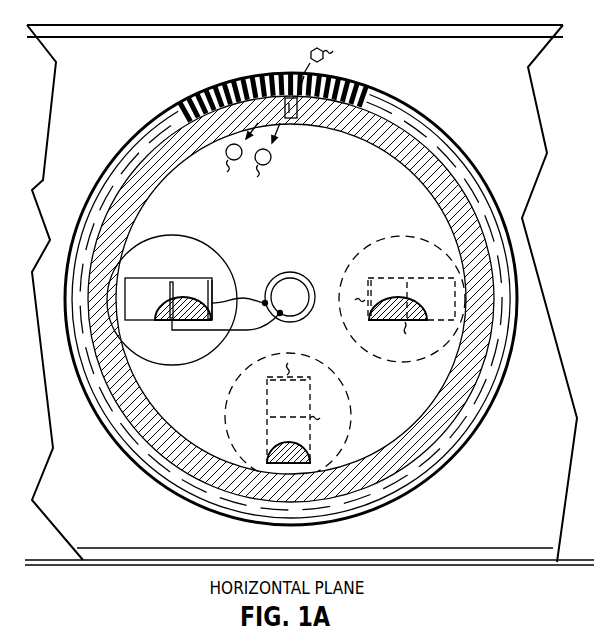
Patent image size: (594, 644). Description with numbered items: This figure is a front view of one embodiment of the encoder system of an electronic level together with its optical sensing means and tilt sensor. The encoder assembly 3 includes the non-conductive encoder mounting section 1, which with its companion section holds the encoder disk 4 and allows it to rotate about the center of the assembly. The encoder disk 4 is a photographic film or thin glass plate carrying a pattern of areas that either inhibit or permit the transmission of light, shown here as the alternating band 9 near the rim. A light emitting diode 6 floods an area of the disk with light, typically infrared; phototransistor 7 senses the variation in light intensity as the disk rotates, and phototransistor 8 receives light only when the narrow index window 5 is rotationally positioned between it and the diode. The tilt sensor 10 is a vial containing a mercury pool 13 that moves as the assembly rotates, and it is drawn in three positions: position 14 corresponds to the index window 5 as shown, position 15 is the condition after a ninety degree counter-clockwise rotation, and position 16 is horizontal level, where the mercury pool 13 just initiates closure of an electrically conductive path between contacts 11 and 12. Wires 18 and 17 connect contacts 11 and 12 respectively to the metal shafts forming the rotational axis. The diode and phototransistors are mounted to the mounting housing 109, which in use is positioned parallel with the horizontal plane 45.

The encoder mounting section 1 is at (408, 185).
The encoder assembly 3 is at (420, 110).
The encoder disk 4 is at (363, 102).
The index window 5 is at (295, 118).
The light emitting diode 6 is at (310, 52).
The phototransistor 7 is at (226, 151).
The phototransistor 8 is at (271, 161).
The segmented band 9 is at (237, 79).
The tilt sensor 10 is at (192, 278).
The contact 11 is at (213, 282).
The contact 12 is at (170, 290).
The mercury pool 13 is at (165, 318).
The tilt sensor position 14 is at (174, 235).
The tilt sensor position 15 is at (355, 403).
The tilt sensor position 16 is at (373, 242).
The wire 17 is at (245, 333).
The wire 18 is at (258, 295).
The horizontal plane 45 is at (453, 568).
The mounting housing 109 is at (513, 95).